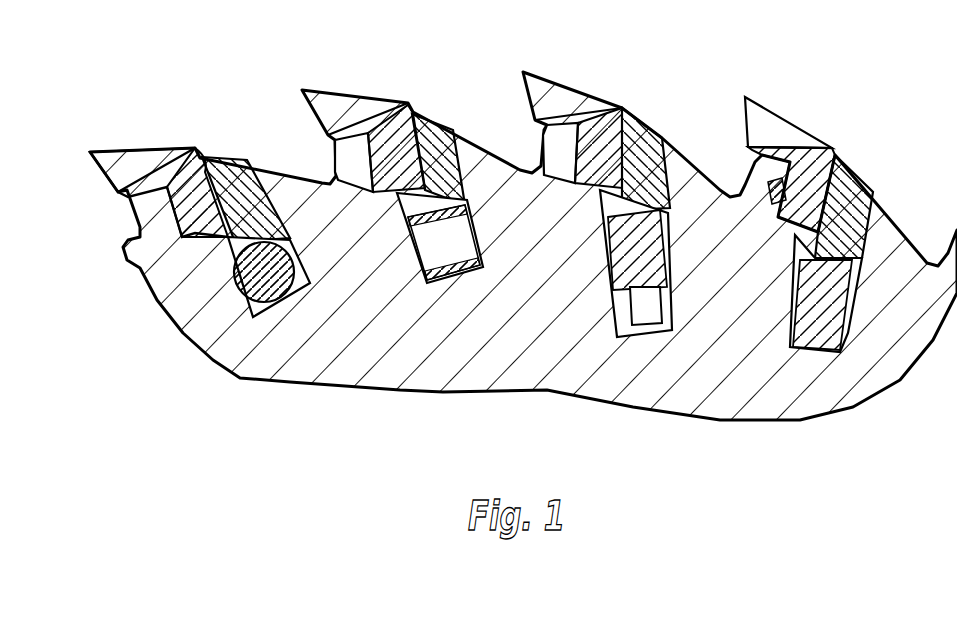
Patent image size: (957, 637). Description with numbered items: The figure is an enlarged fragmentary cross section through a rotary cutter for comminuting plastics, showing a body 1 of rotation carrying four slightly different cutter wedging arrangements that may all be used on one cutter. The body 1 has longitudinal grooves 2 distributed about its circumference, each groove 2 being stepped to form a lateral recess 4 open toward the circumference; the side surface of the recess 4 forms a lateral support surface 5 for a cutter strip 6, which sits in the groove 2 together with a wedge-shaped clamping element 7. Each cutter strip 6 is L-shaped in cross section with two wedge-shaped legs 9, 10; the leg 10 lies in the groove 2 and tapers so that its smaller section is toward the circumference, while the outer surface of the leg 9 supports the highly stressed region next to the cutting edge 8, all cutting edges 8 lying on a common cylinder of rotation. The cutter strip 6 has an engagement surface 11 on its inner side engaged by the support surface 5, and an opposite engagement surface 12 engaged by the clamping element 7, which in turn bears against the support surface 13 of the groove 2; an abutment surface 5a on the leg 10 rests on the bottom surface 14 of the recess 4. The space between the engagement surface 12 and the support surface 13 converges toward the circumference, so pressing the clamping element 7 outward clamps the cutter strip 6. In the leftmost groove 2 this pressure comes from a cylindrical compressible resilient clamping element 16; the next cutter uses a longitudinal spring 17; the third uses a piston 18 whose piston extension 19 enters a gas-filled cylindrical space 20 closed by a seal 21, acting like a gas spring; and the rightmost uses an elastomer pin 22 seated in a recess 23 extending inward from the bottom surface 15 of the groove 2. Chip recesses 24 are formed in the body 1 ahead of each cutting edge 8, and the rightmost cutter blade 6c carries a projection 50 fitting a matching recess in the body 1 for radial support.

The body 1 is at (390, 385).
The longitudinal groove 2 is at (240, 320).
The lateral recess 4 is at (165, 262).
The lateral support surface 5 is at (163, 203).
The abutment surface 5a is at (215, 280).
The cutter strip 6 is at (200, 125).
The cutter blade 6c is at (752, 98).
The clamping element 7 is at (222, 175).
The cutting edge 8 is at (92, 150).
The leg 9 is at (132, 162).
The leg 10 is at (127, 245).
The engagement surface 11 is at (162, 245).
The engagement surface 12 is at (190, 168).
The support surface 13 is at (258, 190).
The bottom surface 14 is at (172, 280).
The bottom surface 15 is at (285, 320).
The resilient clamping element 16 is at (180, 300).
The longitudinal spring 17 is at (440, 275).
The piston 18 is at (610, 245).
The piston extension 19 is at (635, 310).
The cylindrical space 20 is at (615, 335).
The seal 21 is at (668, 300).
The elastomer pin 22 is at (800, 345).
The recess 23 is at (840, 355).
The chip recess 24 is at (305, 165).
The projection 50 is at (770, 200).